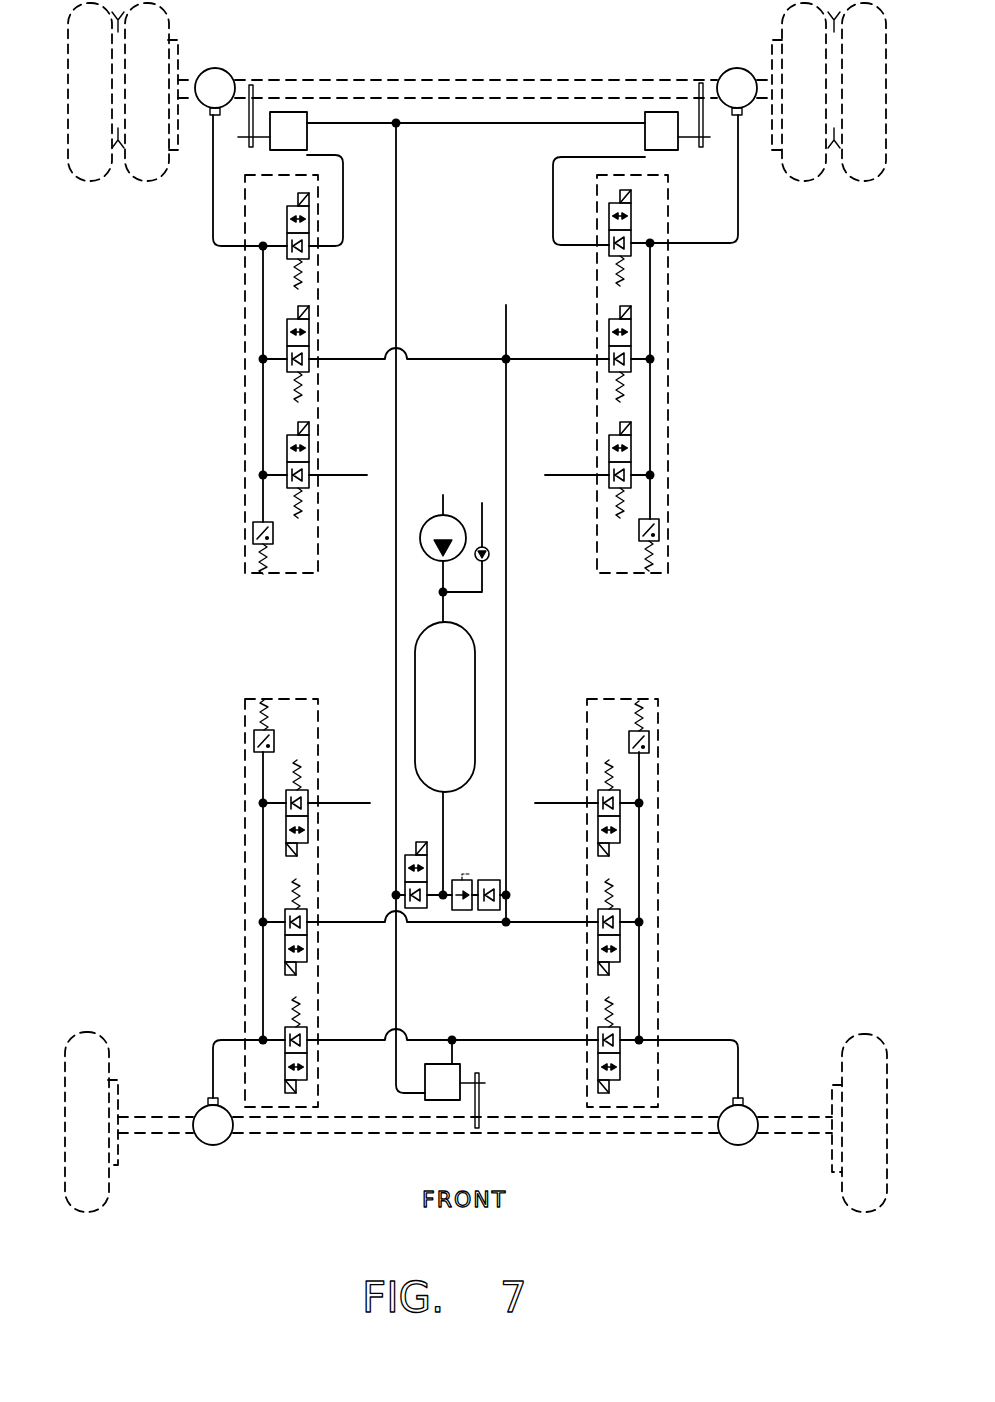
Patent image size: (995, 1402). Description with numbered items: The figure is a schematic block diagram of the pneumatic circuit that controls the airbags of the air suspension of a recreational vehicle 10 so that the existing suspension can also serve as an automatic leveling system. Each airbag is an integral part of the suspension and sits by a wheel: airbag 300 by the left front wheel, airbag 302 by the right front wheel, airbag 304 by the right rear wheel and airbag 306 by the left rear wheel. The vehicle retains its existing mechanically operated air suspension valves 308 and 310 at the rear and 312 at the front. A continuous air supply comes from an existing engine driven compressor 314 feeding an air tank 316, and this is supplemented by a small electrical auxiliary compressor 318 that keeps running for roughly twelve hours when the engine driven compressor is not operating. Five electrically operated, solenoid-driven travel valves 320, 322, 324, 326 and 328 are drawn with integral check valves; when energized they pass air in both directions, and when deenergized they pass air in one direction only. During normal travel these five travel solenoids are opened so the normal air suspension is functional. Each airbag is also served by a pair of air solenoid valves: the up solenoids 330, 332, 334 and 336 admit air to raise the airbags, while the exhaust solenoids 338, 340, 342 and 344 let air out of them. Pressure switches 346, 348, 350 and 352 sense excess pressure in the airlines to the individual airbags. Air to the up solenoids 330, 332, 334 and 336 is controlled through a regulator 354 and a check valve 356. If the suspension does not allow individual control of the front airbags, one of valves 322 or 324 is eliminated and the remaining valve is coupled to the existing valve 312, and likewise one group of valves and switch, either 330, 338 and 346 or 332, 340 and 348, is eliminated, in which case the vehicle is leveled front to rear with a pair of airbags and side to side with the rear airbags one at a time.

The vehicle 10 is at (144, 1022).
The airbag 300 is at (790, 1103).
The airbag 302 is at (203, 1145).
The airbag 304 is at (218, 66).
The airbag 306 is at (746, 46).
The mechanically operated air suspension valve 308 is at (307, 134).
The mechanically operated air suspension valve 310 is at (672, 150).
The mechanically operated air suspension valve 312 is at (447, 1100).
The engine driven compressor 314 is at (450, 512).
The air tank 316 is at (475, 713).
The electrical auxiliary compressor 318 is at (489, 557).
The electrically operated air valve 320 is at (405, 890).
The electrically operated air valve 322 is at (598, 1050).
The electrically operated air valve 324 is at (352, 1050).
The electrically operated air valve 326 is at (309, 236).
The electrically operated air valve 328 is at (609, 226).
The up solenoid 330 is at (285, 941).
The up solenoid 332 is at (620, 947).
The up solenoid 334 is at (263, 351).
The up solenoid 336 is at (631, 352).
The exhaust solenoid 338 is at (286, 826).
The exhaust solenoid 340 is at (620, 830).
The exhaust solenoid 342 is at (263, 470).
The exhaust solenoid 344 is at (653, 462).
The pressure switch 346 is at (254, 740).
The pressure switch 348 is at (651, 742).
The pressure switch 350 is at (273, 535).
The pressure switch 352 is at (660, 530).
The regulator 354 is at (470, 880).
The check valve 356 is at (502, 882).